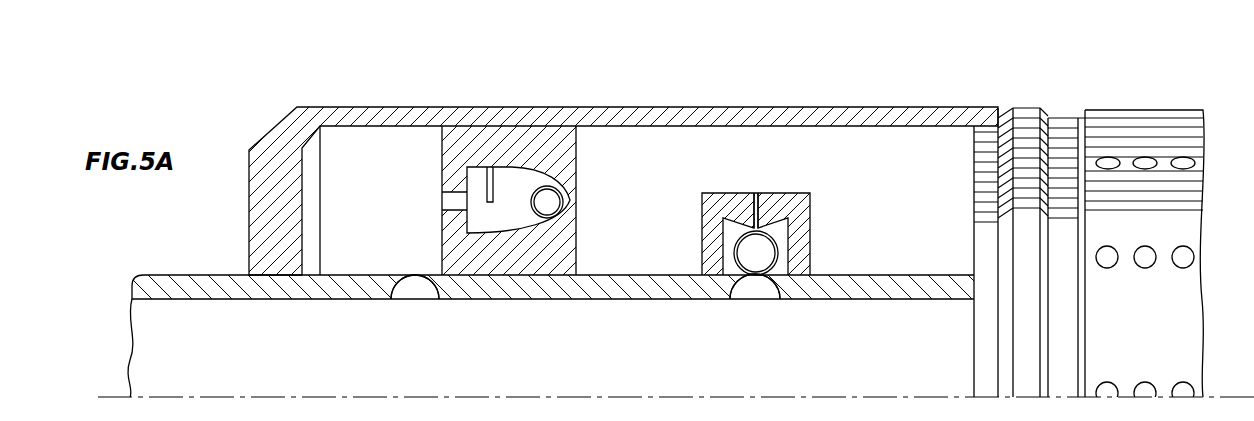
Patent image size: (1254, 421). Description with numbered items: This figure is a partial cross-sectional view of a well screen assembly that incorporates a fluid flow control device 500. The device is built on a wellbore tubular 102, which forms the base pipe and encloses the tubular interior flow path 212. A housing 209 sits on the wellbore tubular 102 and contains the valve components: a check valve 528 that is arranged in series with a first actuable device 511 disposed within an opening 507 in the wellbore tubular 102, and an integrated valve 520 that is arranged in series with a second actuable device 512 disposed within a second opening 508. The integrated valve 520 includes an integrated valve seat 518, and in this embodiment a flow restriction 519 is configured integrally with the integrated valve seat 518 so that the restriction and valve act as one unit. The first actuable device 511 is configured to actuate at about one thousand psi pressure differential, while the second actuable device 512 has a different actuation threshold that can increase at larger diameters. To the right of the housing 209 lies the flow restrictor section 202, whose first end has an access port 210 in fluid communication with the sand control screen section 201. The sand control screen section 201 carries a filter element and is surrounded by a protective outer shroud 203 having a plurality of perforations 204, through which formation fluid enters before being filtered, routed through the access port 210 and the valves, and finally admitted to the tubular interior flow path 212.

The fluid flow control device 500 is at (188, 85).
The wellbore tubular 102 is at (197, 299).
The housing 209 is at (614, 108).
The check valve 528 is at (508, 125).
The integrated valve seat 518 is at (808, 208).
The flow restriction 519 is at (754, 193).
The integrated valve 520 is at (810, 240).
The opening 507 is at (395, 301).
The first actuable device 511 is at (415, 290).
The opening 508 is at (742, 301).
The second actuable device 512 is at (760, 293).
The access port 210 is at (977, 253).
The flow restrictor section 202 is at (941, 107).
The sand control screen section 201 is at (1078, 107).
The protective outer shroud 203 is at (1146, 123).
The perforations 204 is at (1178, 156).
The tubular interior flow path 212 is at (915, 387).